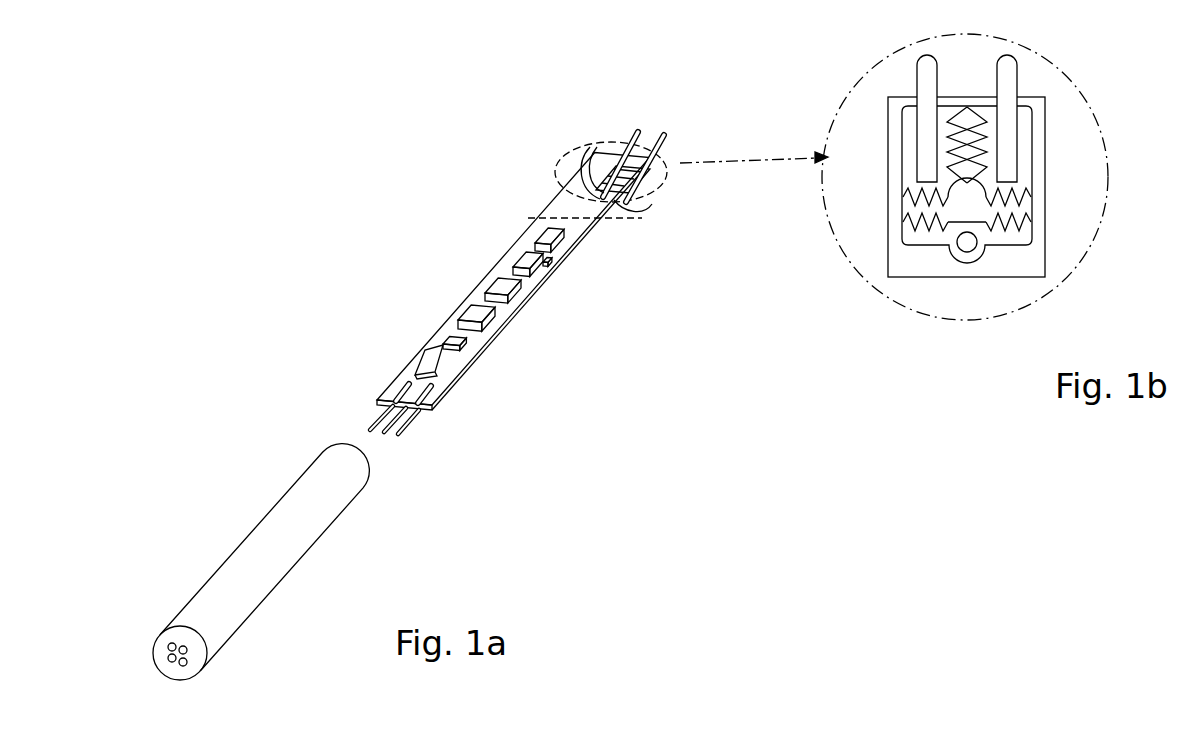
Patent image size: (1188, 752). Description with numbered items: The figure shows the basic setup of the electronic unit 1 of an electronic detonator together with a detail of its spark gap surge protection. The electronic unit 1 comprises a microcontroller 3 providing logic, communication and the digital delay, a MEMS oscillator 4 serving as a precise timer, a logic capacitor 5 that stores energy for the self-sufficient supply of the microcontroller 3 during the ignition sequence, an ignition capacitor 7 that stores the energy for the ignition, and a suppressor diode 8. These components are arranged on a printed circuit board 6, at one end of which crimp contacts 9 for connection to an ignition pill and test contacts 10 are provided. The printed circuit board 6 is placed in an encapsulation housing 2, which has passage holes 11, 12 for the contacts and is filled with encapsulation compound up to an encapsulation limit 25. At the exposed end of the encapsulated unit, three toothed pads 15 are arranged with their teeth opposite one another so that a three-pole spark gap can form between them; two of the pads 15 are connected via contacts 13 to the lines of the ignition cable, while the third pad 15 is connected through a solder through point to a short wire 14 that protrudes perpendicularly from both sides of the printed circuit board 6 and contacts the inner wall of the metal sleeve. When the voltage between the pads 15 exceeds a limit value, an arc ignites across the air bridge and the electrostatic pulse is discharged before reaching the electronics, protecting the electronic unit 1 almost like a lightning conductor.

In FIG. 1A, the electronic unit 1 is at (552, 305).
In FIG. 1A, the encapsulation housing 2 is at (246, 557).
In FIG. 1A, the microcontroller 3 is at (426, 357).
In FIG. 1A, the MEMS oscillator 4 is at (460, 344).
In FIG. 1A, the logic capacitor 5 is at (478, 301).
In FIG. 1A, the printed circuit board 6 is at (510, 271).
In FIG. 1B, the printed circuit board 6 is at (1030, 257).
In FIG. 1A, the ignition capacitor 7 is at (551, 263).
In FIG. 1A, the suppressor diode 8 is at (540, 234).
In FIG. 1A, the crimp contacts 9 is at (376, 414).
In FIG. 1A, the test contacts 10 is at (412, 413).
In FIG. 1A, the passage hole 11 is at (152, 651).
In FIG. 1A, the passage hole 12 is at (204, 662).
In FIG. 1A, the contacts 13 is at (662, 133).
In FIG. 1B, the contacts 13 is at (1010, 80).
In FIG. 1A, the wire 14 is at (590, 150).
In FIG. 1B, the wire 14 is at (968, 252).
In FIG. 1B, the pads 15 is at (908, 183).
In FIG. 1A, the encapsulation limit 25 is at (537, 216).